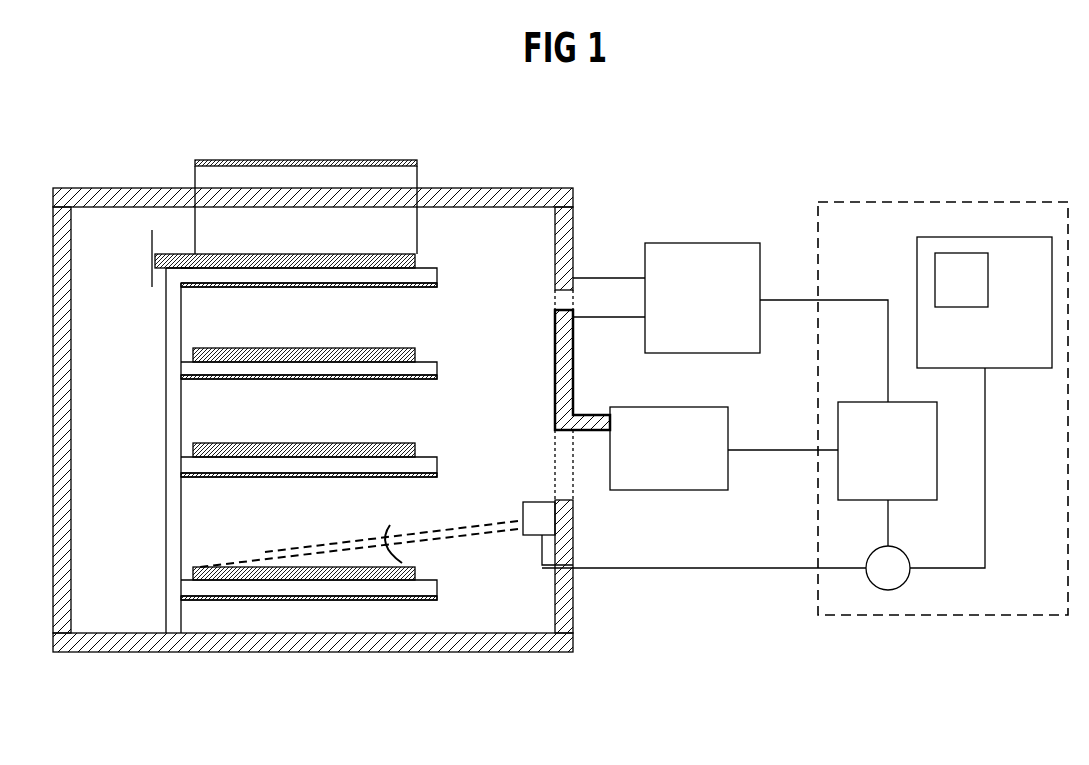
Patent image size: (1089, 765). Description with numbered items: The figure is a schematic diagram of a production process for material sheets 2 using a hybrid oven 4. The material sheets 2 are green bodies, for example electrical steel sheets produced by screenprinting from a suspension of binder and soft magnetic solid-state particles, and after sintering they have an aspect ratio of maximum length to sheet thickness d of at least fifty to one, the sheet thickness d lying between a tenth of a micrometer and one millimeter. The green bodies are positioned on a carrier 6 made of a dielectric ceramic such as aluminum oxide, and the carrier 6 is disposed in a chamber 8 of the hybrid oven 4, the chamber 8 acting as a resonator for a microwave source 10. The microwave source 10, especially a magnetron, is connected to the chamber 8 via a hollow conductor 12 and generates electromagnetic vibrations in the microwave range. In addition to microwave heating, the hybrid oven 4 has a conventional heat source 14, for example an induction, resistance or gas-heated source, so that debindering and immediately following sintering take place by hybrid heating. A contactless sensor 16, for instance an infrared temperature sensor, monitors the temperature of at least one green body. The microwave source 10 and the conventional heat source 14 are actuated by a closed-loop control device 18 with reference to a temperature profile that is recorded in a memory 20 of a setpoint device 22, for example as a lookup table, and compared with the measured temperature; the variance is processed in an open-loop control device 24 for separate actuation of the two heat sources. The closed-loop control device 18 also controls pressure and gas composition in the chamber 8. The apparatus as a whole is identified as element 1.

The cooking appliance 1 is at (306, 160).
The material sheets 2 is at (420, 262).
The hybrid oven 4 is at (612, 237).
The carrier 6 is at (164, 312).
The chamber 8 is at (468, 623).
The microwave source 10 is at (735, 470).
The hollow conductor 12 is at (593, 452).
The conventional heat source 14 is at (704, 243).
The sensor 16 is at (523, 508).
The closed-loop control device 18 is at (990, 615).
The memory 20 is at (958, 253).
The setpoint device 22 is at (1028, 237).
The open-loop control device 24 is at (937, 450).
The sheet thickness d is at (150, 258).